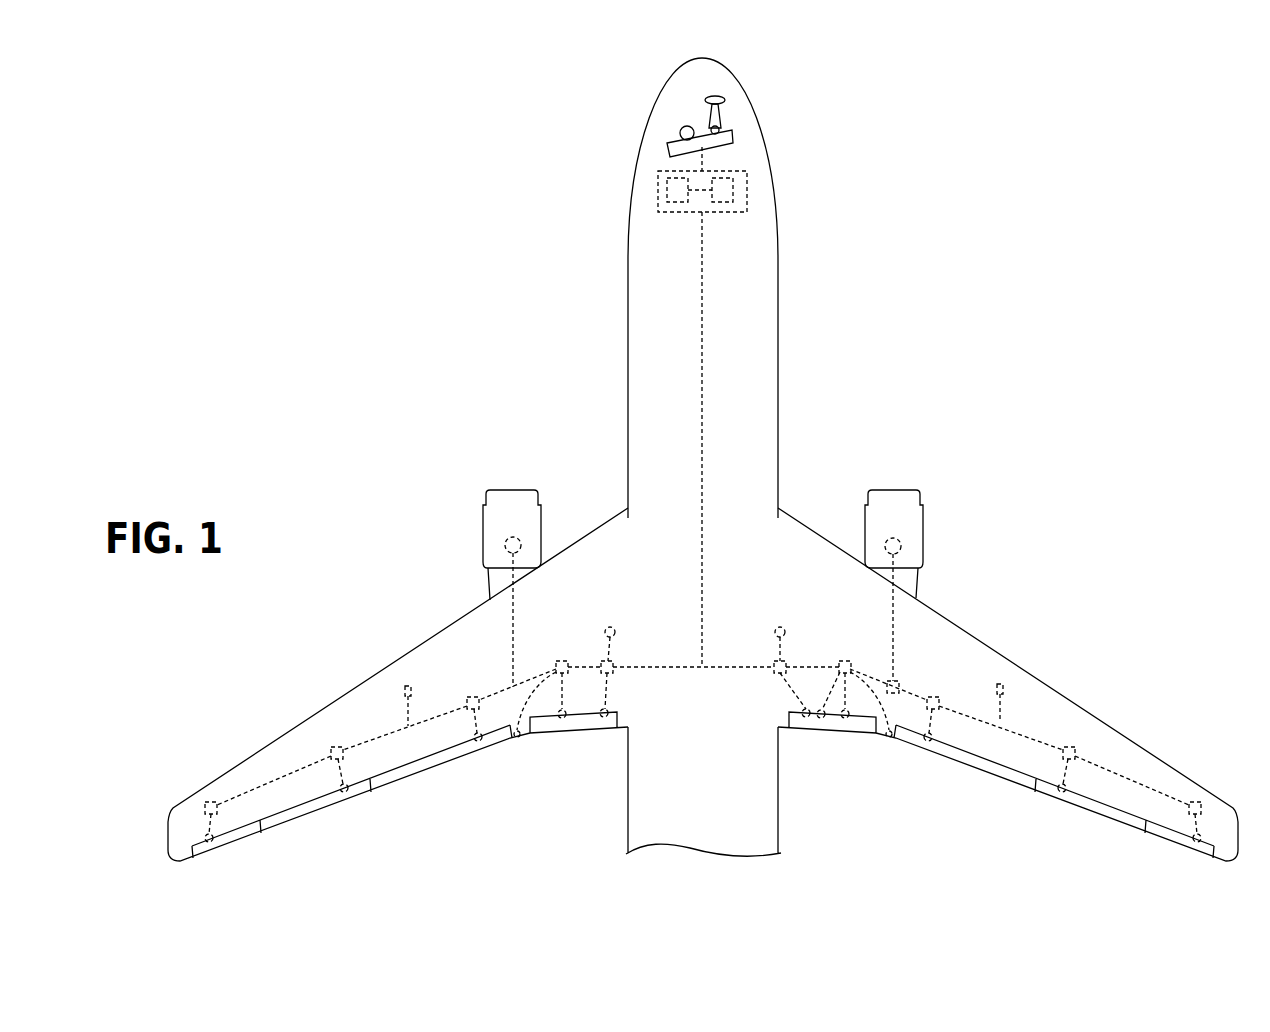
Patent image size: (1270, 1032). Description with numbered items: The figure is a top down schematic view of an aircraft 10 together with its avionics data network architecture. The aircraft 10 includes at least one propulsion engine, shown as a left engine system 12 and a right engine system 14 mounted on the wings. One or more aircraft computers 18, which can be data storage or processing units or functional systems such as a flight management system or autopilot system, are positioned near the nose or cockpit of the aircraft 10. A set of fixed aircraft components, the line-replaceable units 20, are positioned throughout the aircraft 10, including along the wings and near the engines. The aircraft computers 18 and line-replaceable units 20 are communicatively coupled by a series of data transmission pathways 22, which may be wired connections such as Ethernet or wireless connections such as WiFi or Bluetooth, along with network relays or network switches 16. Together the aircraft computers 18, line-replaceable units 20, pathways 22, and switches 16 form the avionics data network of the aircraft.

The aircraft 10 is at (507, 88).
The left engine system 12 is at (512, 497).
The right engine system 14 is at (908, 497).
The network switch 16 is at (222, 834).
The aircraft computer 18 is at (668, 205).
The line-replaceable unit 20 is at (523, 545).
The data transmission pathway 22 is at (700, 378).